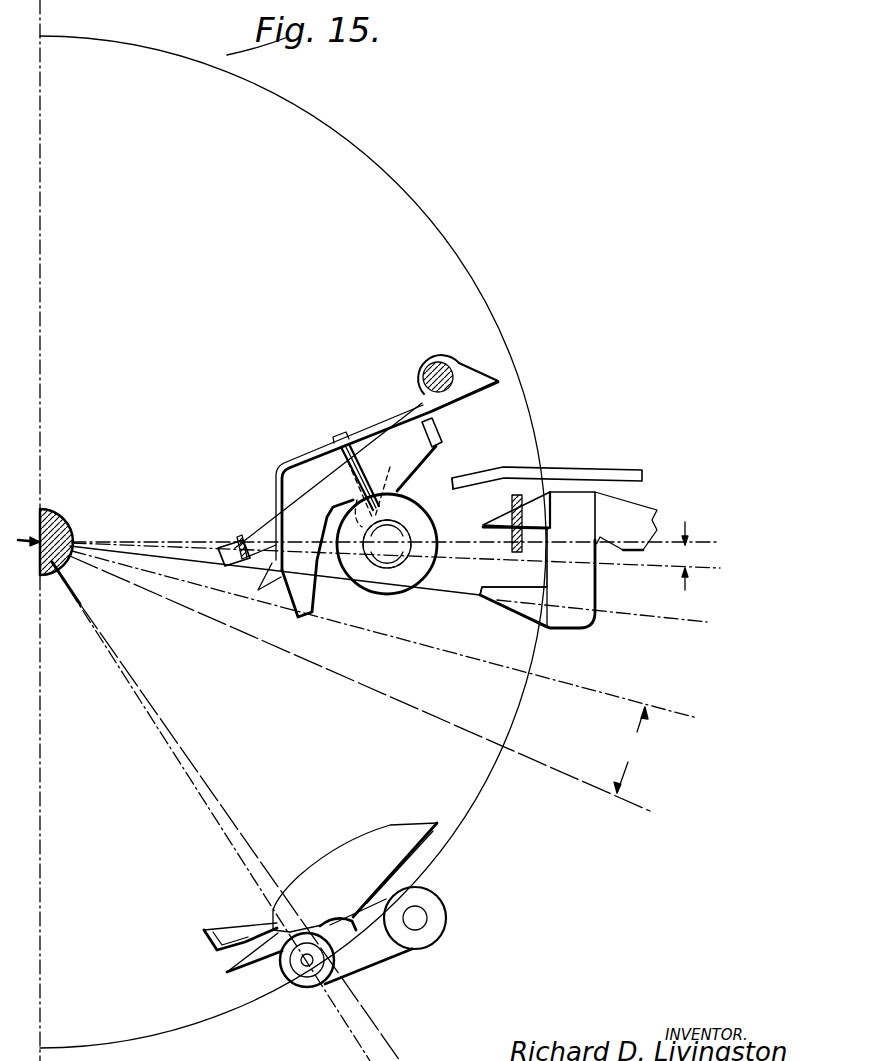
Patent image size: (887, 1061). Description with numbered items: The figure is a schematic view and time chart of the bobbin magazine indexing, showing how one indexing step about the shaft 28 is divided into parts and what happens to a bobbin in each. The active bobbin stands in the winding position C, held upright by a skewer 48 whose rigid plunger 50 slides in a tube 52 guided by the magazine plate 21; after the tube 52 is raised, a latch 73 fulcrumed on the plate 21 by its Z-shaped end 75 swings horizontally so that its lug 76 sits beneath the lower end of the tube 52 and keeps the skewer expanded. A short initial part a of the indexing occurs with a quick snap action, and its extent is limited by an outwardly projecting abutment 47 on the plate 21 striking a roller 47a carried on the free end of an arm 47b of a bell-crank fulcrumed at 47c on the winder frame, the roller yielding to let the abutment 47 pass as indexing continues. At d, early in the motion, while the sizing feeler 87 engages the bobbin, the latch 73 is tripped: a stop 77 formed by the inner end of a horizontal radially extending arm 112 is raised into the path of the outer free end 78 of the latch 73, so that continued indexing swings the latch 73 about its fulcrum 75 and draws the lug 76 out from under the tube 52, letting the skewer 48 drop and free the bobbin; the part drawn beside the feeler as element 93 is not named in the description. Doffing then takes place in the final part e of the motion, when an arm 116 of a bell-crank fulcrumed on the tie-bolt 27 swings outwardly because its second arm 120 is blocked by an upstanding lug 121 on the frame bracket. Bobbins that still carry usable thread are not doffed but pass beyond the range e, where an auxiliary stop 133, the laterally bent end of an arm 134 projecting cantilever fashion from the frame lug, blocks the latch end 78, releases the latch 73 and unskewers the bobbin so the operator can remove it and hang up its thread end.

The shaft 28 is at (61, 528).
The tie-bolt 27 is at (446, 368).
The second arm of the bell-crank 120 is at (503, 388).
The arm of a bell-crank 116 is at (302, 457).
The latch 73 is at (318, 482).
The outer free end of the latch 78 is at (442, 420).
The lug 76 is at (378, 495).
The tube 52 is at (362, 585).
The plunger 50 is at (400, 565).
The winding position C is at (447, 513).
The skewer 48 is at (348, 592).
The Z-shaped end of the latch 75 is at (236, 537).
The arm 112 is at (616, 467).
The stop 77 is at (471, 476).
The upstanding lug 121 is at (513, 497).
The bracket arm 93 is at (484, 527).
The sizing feeler 87 is at (490, 575).
The initial part of the indexing motion a is at (683, 556).
The latch tripping point d is at (645, 612).
The final part of the indexing motion e is at (631, 750).
The magazine plate 21 is at (400, 830).
The abutment 47 is at (338, 892).
The roller 47a is at (308, 988).
The arm of the bell-crank 47b is at (380, 957).
The bell-crank fulcrum 47c is at (430, 920).
The auxiliary stop 133 is at (212, 927).
The arm 134 is at (226, 962).